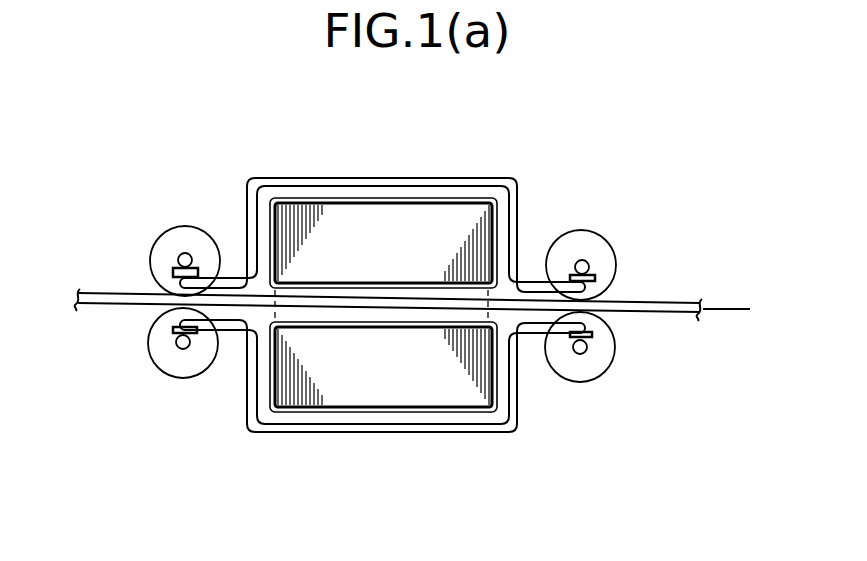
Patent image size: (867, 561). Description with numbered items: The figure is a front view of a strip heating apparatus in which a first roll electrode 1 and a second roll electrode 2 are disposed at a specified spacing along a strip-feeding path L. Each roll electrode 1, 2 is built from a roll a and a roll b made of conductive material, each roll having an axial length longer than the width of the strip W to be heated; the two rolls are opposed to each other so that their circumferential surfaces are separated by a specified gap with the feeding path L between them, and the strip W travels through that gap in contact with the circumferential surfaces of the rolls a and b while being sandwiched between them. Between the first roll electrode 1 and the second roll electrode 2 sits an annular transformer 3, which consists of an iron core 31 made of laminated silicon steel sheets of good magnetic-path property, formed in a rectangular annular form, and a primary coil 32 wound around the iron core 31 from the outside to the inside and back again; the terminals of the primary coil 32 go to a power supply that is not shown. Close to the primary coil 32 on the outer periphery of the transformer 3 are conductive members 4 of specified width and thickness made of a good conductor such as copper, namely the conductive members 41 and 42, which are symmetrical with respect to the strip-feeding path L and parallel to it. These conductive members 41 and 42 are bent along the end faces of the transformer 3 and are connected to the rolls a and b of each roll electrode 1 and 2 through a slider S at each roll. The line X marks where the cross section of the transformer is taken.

The first roll electrode 1 is at (197, 212).
The second roll electrode 2 is at (584, 224).
The annular transformer 3 is at (430, 259).
The conductive members 4 is at (382, 288).
The iron core 31 is at (405, 232).
The primary coil 32 is at (468, 203).
The conductive member 41 is at (290, 179).
The conductive member 42 is at (452, 433).
The strip W is at (108, 293).
The strip-feeding path L is at (740, 310).
The slider S is at (193, 267).
The roll a is at (182, 226).
The roll b is at (183, 378).
The line X— X is at (388, 170).